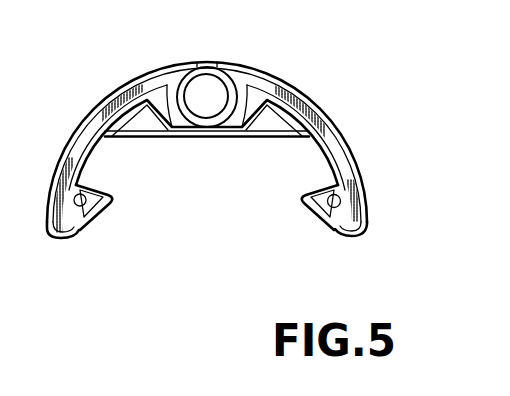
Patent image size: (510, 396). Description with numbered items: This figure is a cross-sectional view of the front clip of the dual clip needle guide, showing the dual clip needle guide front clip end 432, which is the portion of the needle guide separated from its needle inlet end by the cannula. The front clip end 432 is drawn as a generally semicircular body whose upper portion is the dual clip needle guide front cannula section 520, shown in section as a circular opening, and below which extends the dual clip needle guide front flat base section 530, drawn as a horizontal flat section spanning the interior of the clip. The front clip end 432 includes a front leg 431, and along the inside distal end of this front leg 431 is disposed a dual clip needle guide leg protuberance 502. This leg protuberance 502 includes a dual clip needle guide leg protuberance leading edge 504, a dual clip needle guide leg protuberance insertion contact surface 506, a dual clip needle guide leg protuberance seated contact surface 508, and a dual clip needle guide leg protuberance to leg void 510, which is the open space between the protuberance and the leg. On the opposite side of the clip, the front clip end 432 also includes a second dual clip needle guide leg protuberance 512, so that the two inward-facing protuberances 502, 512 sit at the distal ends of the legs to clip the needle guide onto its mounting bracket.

The front leg 431 is at (327, 113).
The dual clip needle guide front clip end 432 is at (166, 47).
The dual clip needle guide front cannula section 520 is at (176, 97).
The dual clip needle guide front flat base section 530 is at (224, 142).
The second dual clip needle guide leg protuberance 512 is at (115, 233).
The dual clip needle guide leg protuberance seated contact surface 508 is at (314, 189).
The dual clip needle guide leg protuberance to leg void 510 is at (342, 204).
The dual clip needle guide leg protuberance 502 is at (303, 223).
The dual clip needle guide leg protuberance insertion contact surface 506 is at (323, 218).
The dual clip needle guide leg protuberance leading edge 504 is at (349, 236).